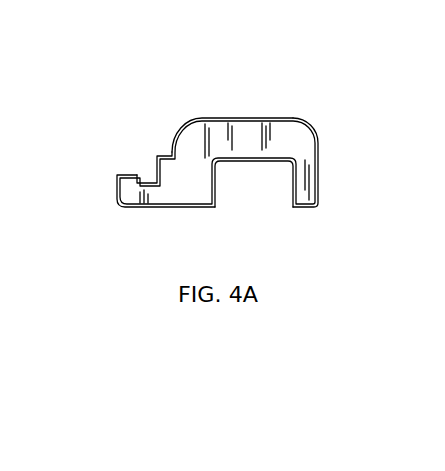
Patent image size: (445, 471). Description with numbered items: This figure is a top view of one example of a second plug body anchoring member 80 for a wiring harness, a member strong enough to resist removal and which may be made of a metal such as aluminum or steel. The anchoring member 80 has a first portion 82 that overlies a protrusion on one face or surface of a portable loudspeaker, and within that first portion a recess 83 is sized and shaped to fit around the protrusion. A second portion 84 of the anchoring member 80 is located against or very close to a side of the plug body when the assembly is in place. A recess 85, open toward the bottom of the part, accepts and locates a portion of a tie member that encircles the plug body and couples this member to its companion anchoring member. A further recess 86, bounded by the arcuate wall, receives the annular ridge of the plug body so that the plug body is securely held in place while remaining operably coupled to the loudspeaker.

The second plug body anchoring member 80 is at (218, 142).
The first portion 82 is at (128, 194).
The recess 83 is at (147, 177).
The second portion 84 is at (305, 197).
The recess 85 is at (240, 190).
The recess 86 is at (170, 150).